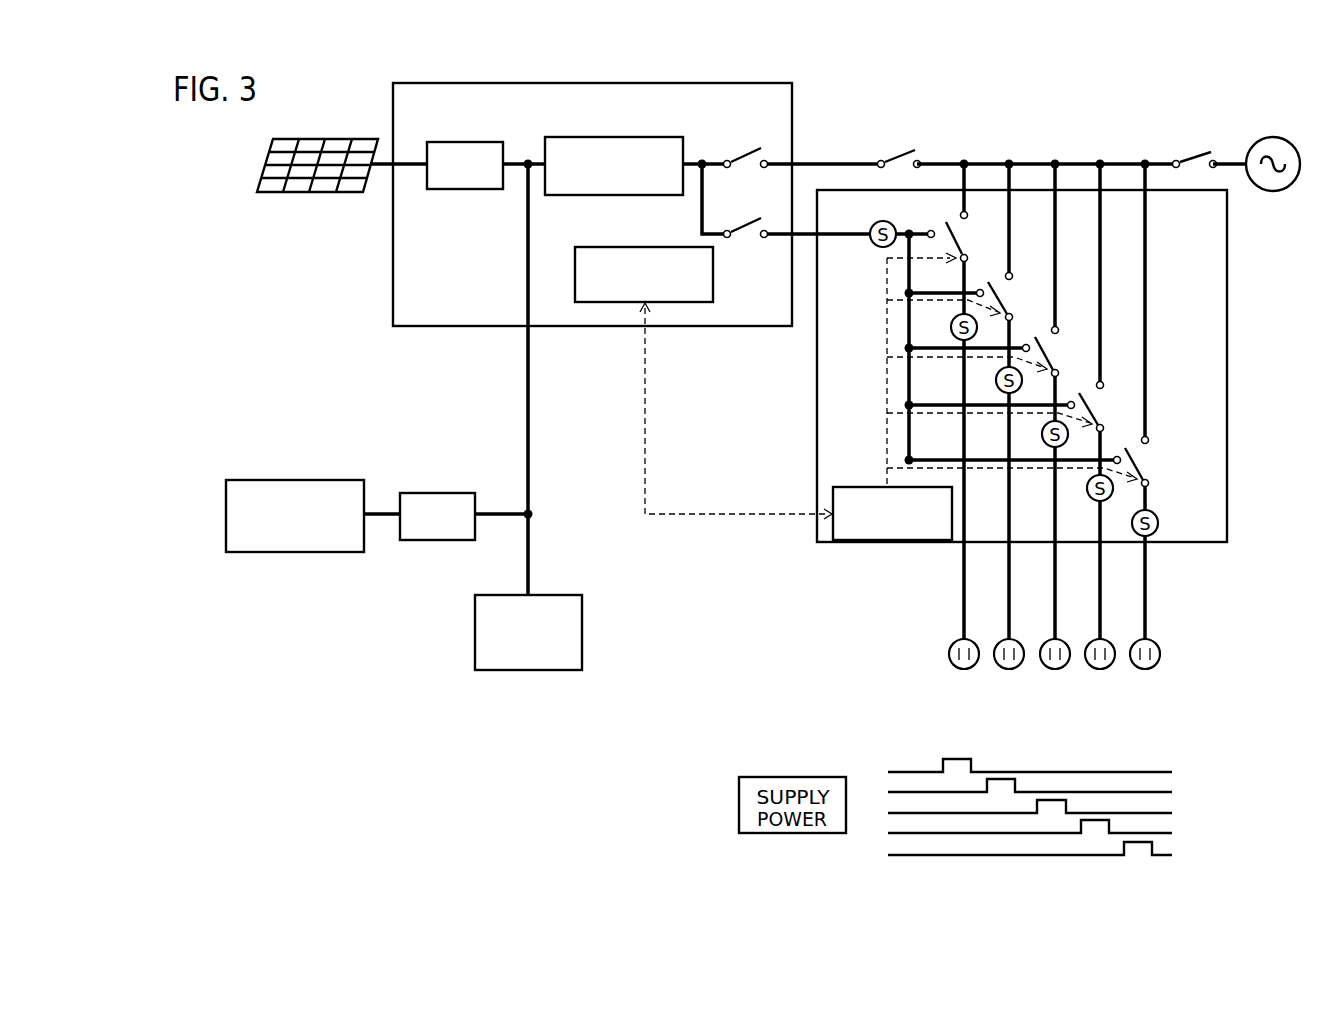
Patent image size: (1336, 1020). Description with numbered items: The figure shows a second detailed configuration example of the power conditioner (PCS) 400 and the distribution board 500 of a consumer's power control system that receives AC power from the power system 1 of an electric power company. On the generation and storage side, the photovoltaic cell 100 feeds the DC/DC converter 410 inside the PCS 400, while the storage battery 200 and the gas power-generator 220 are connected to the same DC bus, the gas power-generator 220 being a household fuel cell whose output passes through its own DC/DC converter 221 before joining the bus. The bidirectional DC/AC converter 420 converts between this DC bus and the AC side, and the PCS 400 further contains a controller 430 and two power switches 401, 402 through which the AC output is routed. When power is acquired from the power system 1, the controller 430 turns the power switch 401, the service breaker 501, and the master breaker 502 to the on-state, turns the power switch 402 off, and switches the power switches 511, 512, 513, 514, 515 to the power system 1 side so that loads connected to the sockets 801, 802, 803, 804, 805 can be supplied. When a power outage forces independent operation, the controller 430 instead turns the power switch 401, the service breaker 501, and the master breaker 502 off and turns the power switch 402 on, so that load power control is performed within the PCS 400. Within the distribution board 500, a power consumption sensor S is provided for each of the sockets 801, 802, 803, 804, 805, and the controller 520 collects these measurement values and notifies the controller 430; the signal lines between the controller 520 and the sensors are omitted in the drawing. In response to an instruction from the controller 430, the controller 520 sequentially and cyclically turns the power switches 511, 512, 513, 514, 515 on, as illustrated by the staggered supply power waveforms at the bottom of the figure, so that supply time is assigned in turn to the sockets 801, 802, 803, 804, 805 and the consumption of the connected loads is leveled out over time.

The power system 1 is at (1278, 139).
The photovoltaic cell 100 is at (311, 138).
The storage battery 200 is at (556, 595).
The gas power-generator 220 is at (320, 480).
The DC/DC converter 221 is at (436, 493).
The power conditioner 400 is at (689, 83).
The power switch 401 is at (752, 151).
The power switch 402 is at (752, 221).
The DC/DC converter 410 is at (462, 142).
The bidirectional DC/AC converter 420 is at (640, 137).
The controller 430 is at (647, 247).
The distribution board 500 is at (1227, 276).
The service breaker 501 is at (900, 150).
The master breaker 502 is at (1194, 156).
The power switch 511 is at (955, 240).
The power switch 512 is at (998, 296).
The power switch 513 is at (1046, 353).
The power switch 514 is at (1090, 405).
The power switch 515 is at (1133, 462).
The controller 520 is at (870, 487).
The socket 801 is at (962, 670).
The socket 802 is at (1007, 670).
The socket 803 is at (1053, 670).
The socket 804 is at (1098, 670).
The socket 805 is at (1144, 670).